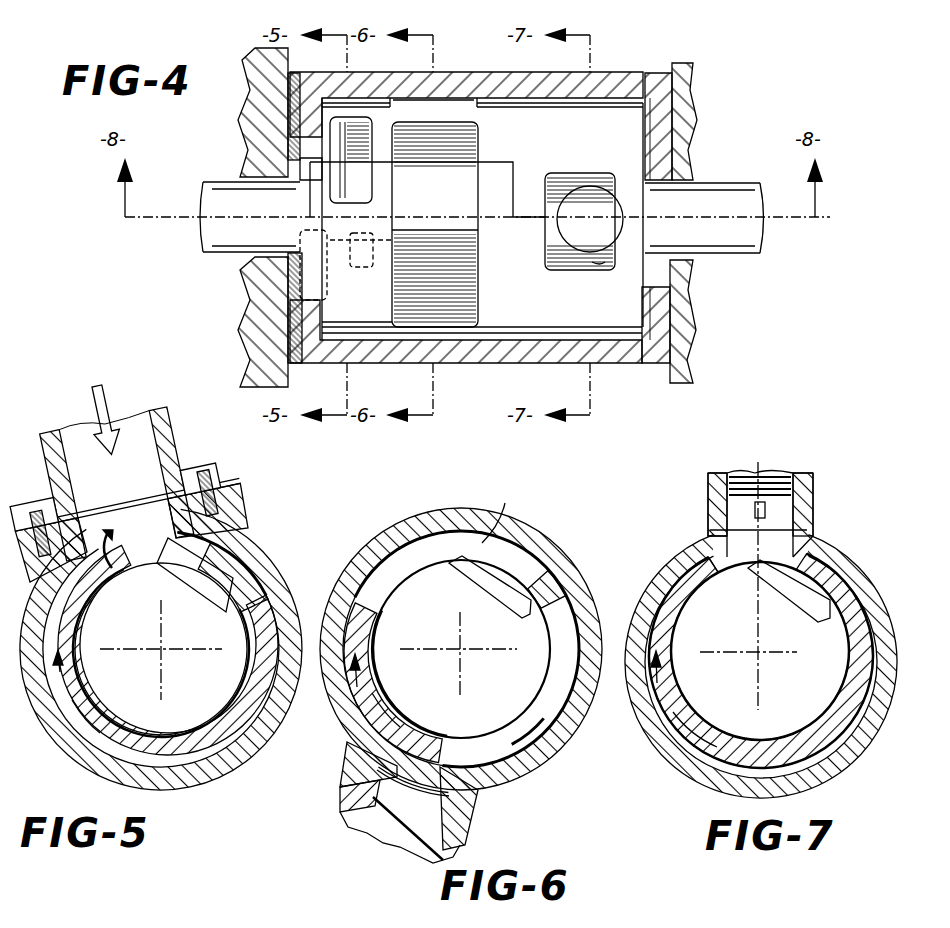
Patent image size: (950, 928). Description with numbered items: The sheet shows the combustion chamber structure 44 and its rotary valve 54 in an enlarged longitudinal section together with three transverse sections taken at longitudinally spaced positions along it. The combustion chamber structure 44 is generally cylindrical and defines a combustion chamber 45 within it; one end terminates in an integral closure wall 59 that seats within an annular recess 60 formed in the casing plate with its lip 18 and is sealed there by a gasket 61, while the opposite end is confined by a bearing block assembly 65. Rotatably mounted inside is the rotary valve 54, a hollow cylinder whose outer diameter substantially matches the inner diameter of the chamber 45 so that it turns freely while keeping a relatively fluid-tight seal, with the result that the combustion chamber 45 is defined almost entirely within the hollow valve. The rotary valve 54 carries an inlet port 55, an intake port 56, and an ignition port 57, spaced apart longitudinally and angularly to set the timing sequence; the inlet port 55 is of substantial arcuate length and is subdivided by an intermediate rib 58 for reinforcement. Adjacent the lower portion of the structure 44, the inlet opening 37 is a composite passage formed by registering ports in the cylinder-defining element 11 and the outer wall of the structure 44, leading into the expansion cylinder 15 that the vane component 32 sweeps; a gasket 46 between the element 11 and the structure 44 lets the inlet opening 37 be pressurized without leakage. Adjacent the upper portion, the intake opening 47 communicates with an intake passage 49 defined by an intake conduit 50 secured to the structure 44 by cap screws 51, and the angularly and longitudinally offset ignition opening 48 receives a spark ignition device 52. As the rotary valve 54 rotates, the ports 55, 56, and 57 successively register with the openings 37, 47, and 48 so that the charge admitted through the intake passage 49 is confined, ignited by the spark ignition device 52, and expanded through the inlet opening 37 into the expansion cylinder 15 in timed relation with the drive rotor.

In FIG. 6, the cylinder-defining element 11 is at (347, 768).
In FIG. 6, the expansion cylinder 15 is at (407, 847).
In FIG. 4, the lip 18 is at (288, 68).
In FIG. 6, the vane component 32 is at (347, 802).
In FIG. 4, the inlet opening 37 is at (300, 262).
In FIG. 6, the inlet opening 37 is at (432, 813).
In FIG. 4, the combustion chamber structure 44 is at (615, 80).
In FIG. 5, the combustion chamber structure 44 is at (270, 556).
In FIG. 6, the combustion chamber structure 44 is at (533, 533).
In FIG. 7, the combustion chamber structure 44 is at (851, 556).
In FIG. 4, the combustion chamber 45 is at (482, 217).
In FIG. 5, the combustion chamber 45 is at (186, 695).
In FIG. 6, the combustion chamber 45 is at (488, 695).
In FIG. 7, the combustion chamber 45 is at (730, 695).
In FIG. 6, the gasket 46 is at (478, 798).
In FIG. 4, the intake opening 47 is at (305, 292).
In FIG. 5, the intake opening 47 is at (108, 572).
In FIG. 4, the ignition opening 48 is at (622, 203).
In FIG. 7, the ignition opening 48 is at (788, 514).
In FIG. 5, the intake passage 49 is at (130, 418).
In FIG. 5, the intake conduit 50 is at (170, 428).
In FIG. 5, the cap screws 51 is at (214, 456).
In FIG. 7, the spark ignition device 52 is at (776, 479).
In FIG. 4, the rotary valve 54 is at (598, 138).
In FIG. 5, the rotary valve 54 is at (268, 592).
In FIG. 6, the rotary valve 54 is at (358, 706).
In FIG. 7, the rotary valve 54 is at (862, 588).
In FIG. 4, the inlet port 55 is at (470, 158).
In FIG. 6, the inlet port 55 is at (572, 750).
In FIG. 4, the intake port 56 is at (345, 140).
In FIG. 5, the intake port 56 is at (232, 562).
In FIG. 4, the ignition port 57 is at (592, 262).
In FIG. 7, the ignition port 57 is at (711, 548).
In FIG. 4, the intermediate rib 58 is at (445, 103).
In FIG. 6, the intermediate rib 58 is at (560, 582).
In FIG. 4, the integral closure wall 59 is at (296, 104).
In FIG. 4, the annular recess 60 is at (298, 162).
In FIG. 4, the gasket 61 is at (290, 312).
In FIG. 4, the bearing block assembly 65 is at (685, 103).